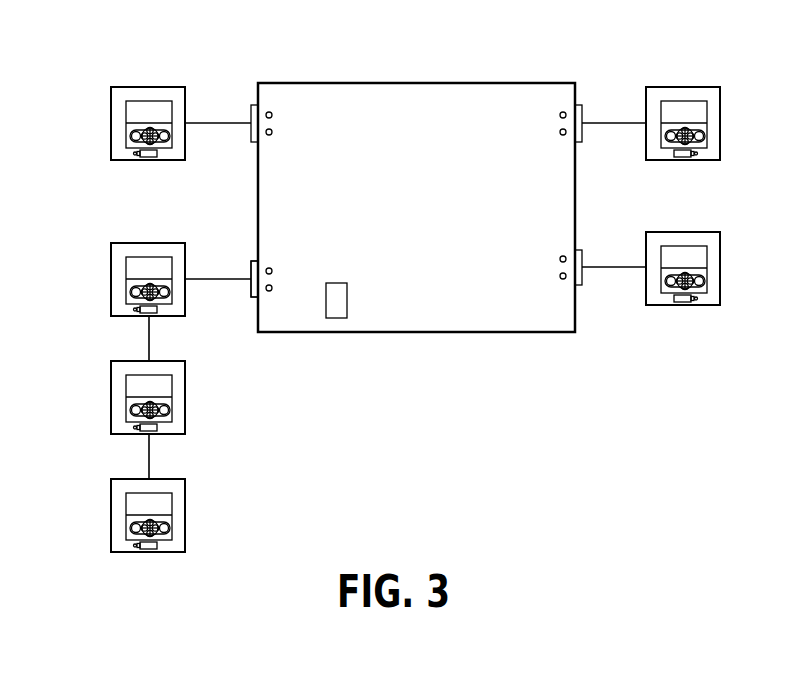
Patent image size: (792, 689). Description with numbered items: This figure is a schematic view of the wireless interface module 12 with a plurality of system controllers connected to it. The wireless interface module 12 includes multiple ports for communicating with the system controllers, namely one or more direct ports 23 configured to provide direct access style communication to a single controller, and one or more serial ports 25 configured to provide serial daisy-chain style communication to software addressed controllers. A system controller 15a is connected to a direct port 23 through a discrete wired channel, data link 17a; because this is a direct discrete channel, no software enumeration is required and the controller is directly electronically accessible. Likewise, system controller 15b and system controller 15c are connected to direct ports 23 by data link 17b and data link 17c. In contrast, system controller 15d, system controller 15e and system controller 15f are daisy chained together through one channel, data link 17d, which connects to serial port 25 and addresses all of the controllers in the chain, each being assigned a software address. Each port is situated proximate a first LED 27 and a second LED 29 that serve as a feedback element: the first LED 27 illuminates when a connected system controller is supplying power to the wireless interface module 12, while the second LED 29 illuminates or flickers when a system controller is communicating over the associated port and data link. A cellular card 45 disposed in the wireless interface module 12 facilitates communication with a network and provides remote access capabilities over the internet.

The wireless interface module 12 is at (457, 83).
The system controller 15a is at (111, 108).
The system controller 15b is at (720, 108).
The system controller 15c is at (720, 257).
The system controller 15d is at (111, 262).
The system controller 15e is at (111, 380).
The system controller 15f is at (111, 497).
The data link 17a is at (218, 123).
The data link 17b is at (617, 123).
The data link 17c is at (620, 267).
The data link 17d is at (218, 279).
The direct port 23 is at (255, 105).
The serial port 25 is at (253, 297).
The first LED 27 is at (272, 113).
The second LED 29 is at (272, 131).
The cellular card 45 is at (338, 318).